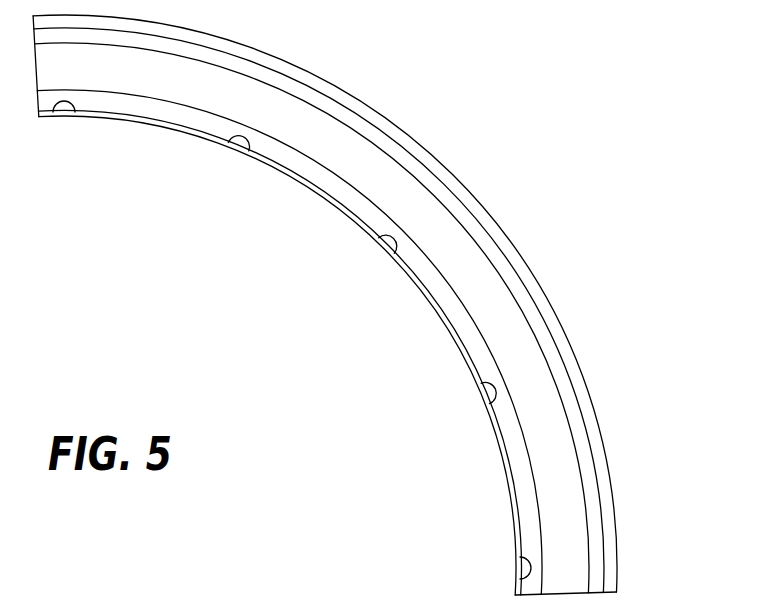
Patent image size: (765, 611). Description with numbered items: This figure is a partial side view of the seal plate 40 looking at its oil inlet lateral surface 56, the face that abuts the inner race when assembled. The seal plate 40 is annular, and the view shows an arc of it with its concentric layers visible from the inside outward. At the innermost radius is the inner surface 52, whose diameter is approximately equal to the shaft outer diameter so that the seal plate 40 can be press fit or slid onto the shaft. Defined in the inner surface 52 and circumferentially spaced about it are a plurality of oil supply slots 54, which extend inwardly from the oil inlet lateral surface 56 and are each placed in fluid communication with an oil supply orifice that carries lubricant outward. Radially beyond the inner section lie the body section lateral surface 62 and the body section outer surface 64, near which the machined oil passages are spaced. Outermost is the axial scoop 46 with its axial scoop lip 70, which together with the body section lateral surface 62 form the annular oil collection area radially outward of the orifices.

The seal plate 40 is at (586, 150).
The axial scoop 46 is at (233, 63).
The axial scoop lip 70 is at (312, 306).
The body section outer surface 64 is at (383, 124).
The body section lateral surface 62 is at (500, 298).
The oil inlet lateral surface 56 is at (153, 110).
The inner surface 52 is at (307, 188).
The oil supply slots 54 is at (65, 120).